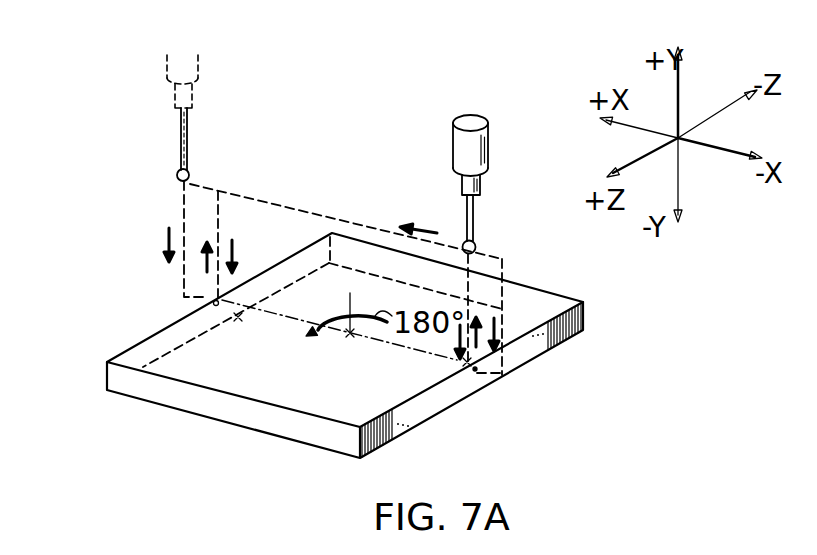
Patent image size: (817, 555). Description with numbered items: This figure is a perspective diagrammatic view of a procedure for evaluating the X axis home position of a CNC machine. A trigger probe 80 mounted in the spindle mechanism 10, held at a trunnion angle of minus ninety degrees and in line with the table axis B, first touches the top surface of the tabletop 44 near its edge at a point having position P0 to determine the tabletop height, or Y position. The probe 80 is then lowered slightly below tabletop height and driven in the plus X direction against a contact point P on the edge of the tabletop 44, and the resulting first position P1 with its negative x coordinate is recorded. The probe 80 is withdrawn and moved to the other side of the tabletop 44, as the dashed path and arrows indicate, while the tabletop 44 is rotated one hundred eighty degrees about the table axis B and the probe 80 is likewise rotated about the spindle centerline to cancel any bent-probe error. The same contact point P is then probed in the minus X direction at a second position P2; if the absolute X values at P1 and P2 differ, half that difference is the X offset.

The spindle mechanism 10 is at (198, 77).
The trigger probe 80 is at (180, 157).
The tabletop 44 is at (267, 422).
The table axis B is at (350, 295).
The contact point P is at (214, 306).
The position of top surface probe point P0 is at (218, 303).
The first position P1 is at (475, 373).
The second position P2 is at (210, 302).